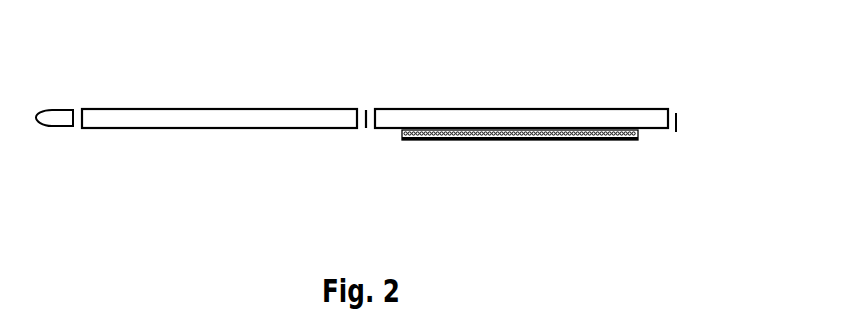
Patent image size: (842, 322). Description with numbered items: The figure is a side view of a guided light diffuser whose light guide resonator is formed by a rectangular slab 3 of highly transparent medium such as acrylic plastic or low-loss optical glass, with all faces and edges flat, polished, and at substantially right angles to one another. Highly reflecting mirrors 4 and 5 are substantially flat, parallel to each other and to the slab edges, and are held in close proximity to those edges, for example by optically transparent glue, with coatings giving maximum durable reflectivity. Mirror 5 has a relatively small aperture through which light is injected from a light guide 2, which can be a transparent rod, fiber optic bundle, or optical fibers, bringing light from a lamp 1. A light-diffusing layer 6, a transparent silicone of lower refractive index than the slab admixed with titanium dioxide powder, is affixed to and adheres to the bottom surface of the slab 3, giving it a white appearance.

The lamp 1 is at (66, 110).
The light guide 2 is at (183, 128).
The rectangular slab 3 is at (458, 109).
The highly reflecting mirror 4 is at (676, 122).
The highly reflecting mirror 5 is at (367, 102).
The light-diffusing layer 6 is at (485, 138).